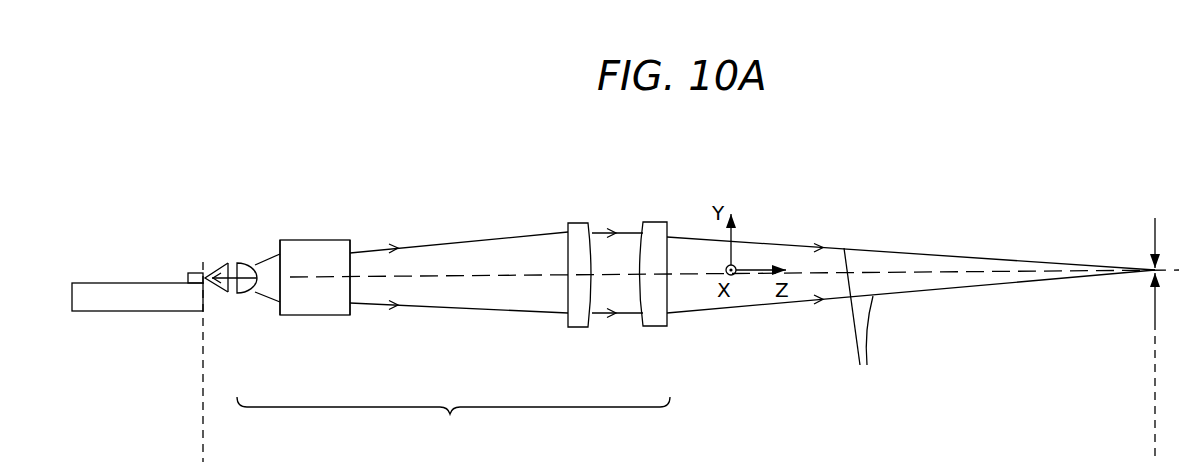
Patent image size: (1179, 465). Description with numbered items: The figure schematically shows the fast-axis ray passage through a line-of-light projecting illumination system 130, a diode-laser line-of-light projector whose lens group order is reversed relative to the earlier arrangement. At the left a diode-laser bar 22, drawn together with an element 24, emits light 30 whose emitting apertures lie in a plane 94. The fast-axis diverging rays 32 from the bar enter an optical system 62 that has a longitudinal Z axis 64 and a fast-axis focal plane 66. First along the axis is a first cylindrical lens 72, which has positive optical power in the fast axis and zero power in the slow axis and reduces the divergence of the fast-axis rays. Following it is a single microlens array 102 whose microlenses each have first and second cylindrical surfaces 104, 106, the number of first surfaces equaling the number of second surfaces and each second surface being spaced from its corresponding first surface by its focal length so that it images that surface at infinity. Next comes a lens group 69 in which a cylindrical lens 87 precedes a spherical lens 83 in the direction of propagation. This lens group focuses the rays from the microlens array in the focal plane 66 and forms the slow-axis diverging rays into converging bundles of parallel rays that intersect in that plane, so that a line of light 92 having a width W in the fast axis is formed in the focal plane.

The diode-laser bar 22 is at (187, 267).
The source mount / substrate 24 is at (133, 295).
The diverging light beam 30 is at (217, 262).
The fast-axis diverging rays 32 is at (219, 265).
The optical system 62 is at (453, 422).
The longitudinal (Z) axis 64 is at (460, 275).
The fast-axis focal plane 66 is at (1152, 372).
The lens group 69 is at (609, 249).
The first cylindrical lens 72 is at (249, 294).
The spherical lens 83 is at (653, 318).
The cylindrical lens 87 is at (582, 233).
The line of light 92 is at (1147, 261).
The plane 94 is at (203, 412).
The microlens array 102 is at (339, 283).
The first cylindrical surfaces 104 is at (285, 245).
The second cylindrical surfaces 106 is at (351, 243).
The system 130 is at (771, 167).